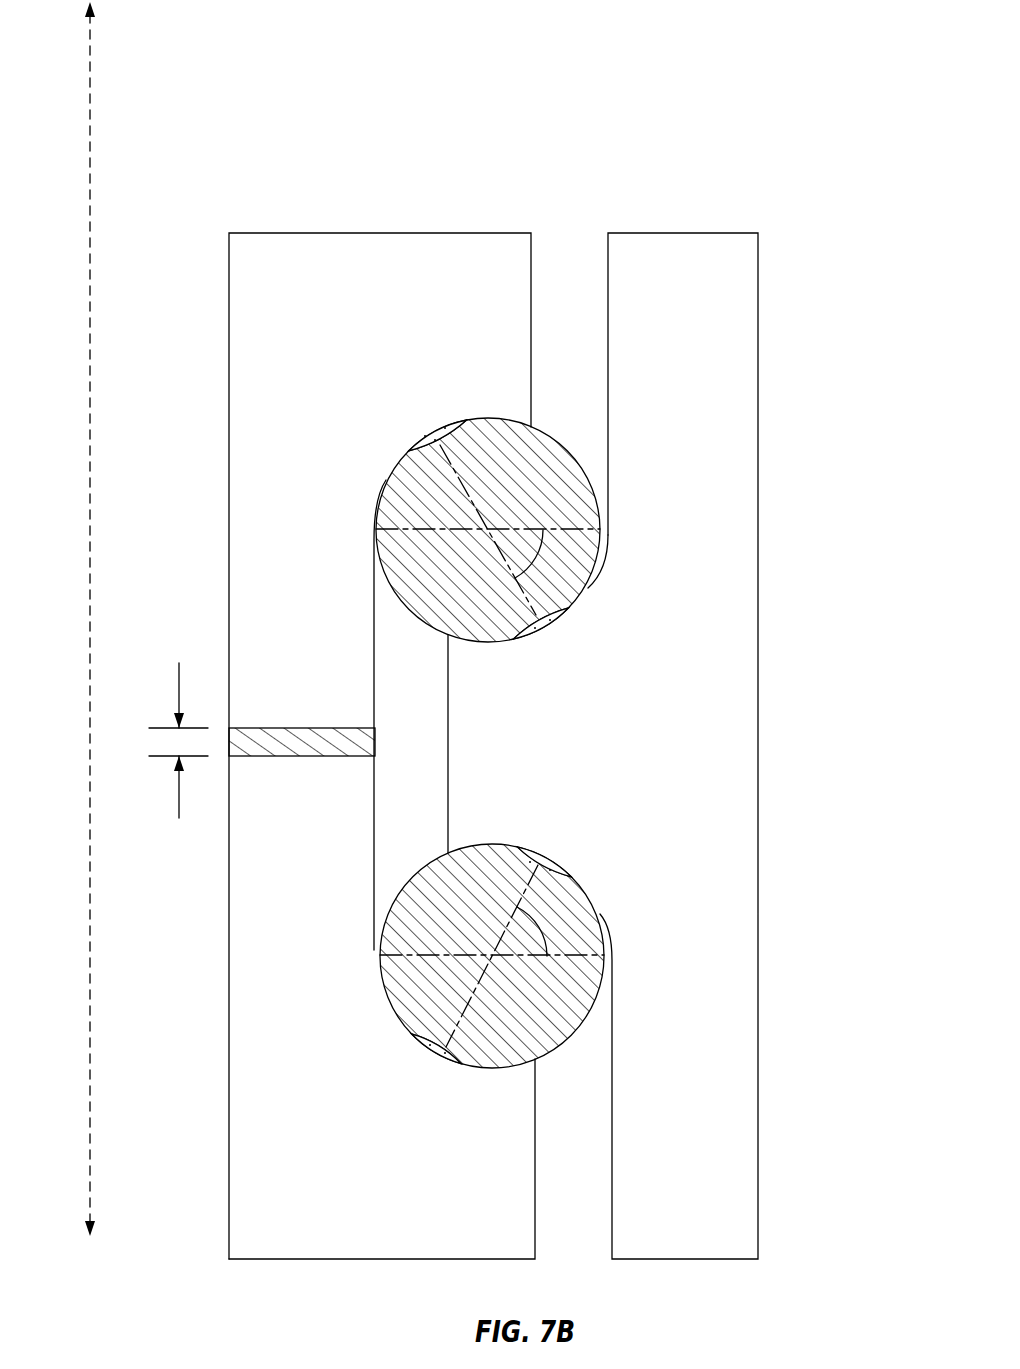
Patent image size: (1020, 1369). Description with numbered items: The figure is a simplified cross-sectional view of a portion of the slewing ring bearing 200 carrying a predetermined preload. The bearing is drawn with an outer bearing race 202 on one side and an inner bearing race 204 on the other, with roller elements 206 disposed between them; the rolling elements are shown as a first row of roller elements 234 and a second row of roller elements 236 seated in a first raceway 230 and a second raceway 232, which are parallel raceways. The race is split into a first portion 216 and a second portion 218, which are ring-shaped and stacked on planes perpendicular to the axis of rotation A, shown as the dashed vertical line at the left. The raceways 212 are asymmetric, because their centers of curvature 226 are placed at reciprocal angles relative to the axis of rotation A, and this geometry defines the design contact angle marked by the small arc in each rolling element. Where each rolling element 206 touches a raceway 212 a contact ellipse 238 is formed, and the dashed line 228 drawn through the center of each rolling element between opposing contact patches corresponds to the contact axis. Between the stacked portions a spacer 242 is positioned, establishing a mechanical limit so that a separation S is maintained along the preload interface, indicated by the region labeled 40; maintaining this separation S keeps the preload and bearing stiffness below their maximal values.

The slewing ring bearing 200 is at (525, 115).
The outer bearing race 202 is at (740, 248).
The inner bearing race 204 is at (341, 262).
The roller elements 206 is at (484, 761).
The raceways 212 is at (375, 463).
The first portion 216 is at (459, 255).
The second portion 218 is at (275, 1240).
The centers of curvature 226 is at (536, 723).
The pin axis 228 is at (500, 505).
The first raceway 230 is at (454, 539).
The second raceway 232 is at (498, 918).
The first row of roller elements 234 is at (412, 507).
The second row of roller elements 236 is at (562, 1018).
The contact ellipse 238 is at (455, 428).
The spacer 242 is at (245, 745).
The slot 40 is at (297, 765).
The axis of rotation A is at (90, 88).
The separation S is at (178, 804).